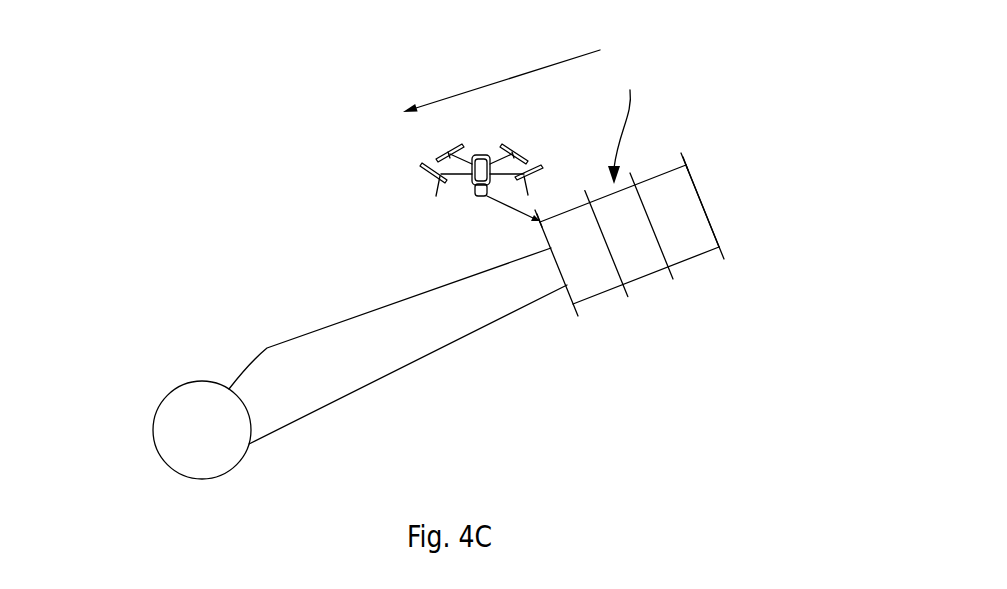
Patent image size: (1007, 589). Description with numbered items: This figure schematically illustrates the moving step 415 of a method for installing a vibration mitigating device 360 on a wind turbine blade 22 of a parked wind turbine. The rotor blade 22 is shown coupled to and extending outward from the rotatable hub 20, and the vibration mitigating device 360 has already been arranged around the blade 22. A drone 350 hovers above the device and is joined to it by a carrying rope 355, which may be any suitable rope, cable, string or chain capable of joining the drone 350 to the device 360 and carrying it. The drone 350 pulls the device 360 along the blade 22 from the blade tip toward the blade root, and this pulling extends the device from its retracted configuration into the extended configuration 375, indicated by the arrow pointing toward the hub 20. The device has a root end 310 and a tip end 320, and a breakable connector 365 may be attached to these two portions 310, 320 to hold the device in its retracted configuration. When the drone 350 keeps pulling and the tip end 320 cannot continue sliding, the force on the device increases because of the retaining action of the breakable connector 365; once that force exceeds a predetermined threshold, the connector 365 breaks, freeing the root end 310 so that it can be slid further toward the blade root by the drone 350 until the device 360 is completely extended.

The rotatable hub 20 is at (163, 434).
The rotor blade 22 is at (371, 366).
The root end 310 is at (566, 293).
The tip end 320 is at (714, 231).
The drone 350 is at (483, 155).
The carrying rope 355 is at (496, 213).
The vibration mitigating device 360 is at (585, 263).
The breakable connector 365 is at (540, 234).
The extended configuration 375 is at (634, 123).
The moving step 415 is at (273, 215).